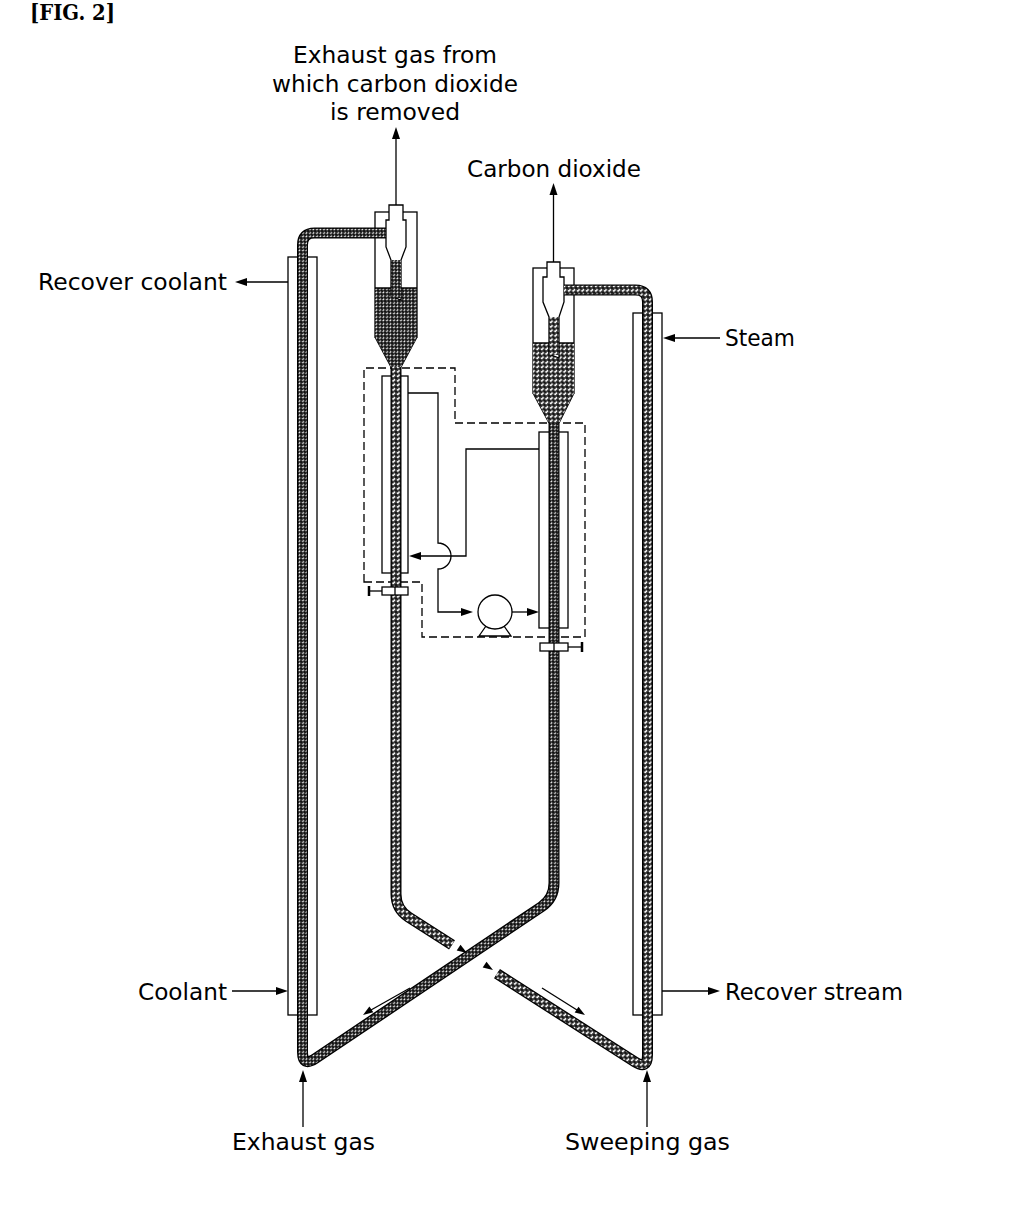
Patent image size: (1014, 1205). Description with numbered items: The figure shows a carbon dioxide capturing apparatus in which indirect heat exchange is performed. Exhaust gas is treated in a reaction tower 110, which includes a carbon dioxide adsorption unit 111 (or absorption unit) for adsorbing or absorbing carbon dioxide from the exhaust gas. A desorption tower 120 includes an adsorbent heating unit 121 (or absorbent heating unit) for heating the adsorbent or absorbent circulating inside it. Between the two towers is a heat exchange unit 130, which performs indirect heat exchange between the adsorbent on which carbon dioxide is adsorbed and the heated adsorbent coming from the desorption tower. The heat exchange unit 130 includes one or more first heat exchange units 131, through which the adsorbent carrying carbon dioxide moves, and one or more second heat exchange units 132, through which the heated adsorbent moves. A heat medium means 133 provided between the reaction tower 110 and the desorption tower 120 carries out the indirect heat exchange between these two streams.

The reaction tower 110 is at (306, 228).
The carbon dioxide adsorption unit 111 is at (288, 636).
The desorption tower 120 is at (596, 283).
The adsorbent heating unit 121 is at (662, 635).
The heat exchange unit 130 is at (364, 440).
The first heat exchange unit 131 is at (382, 527).
The second heat exchange unit 132 is at (568, 522).
The heat medium means 133 is at (494, 594).